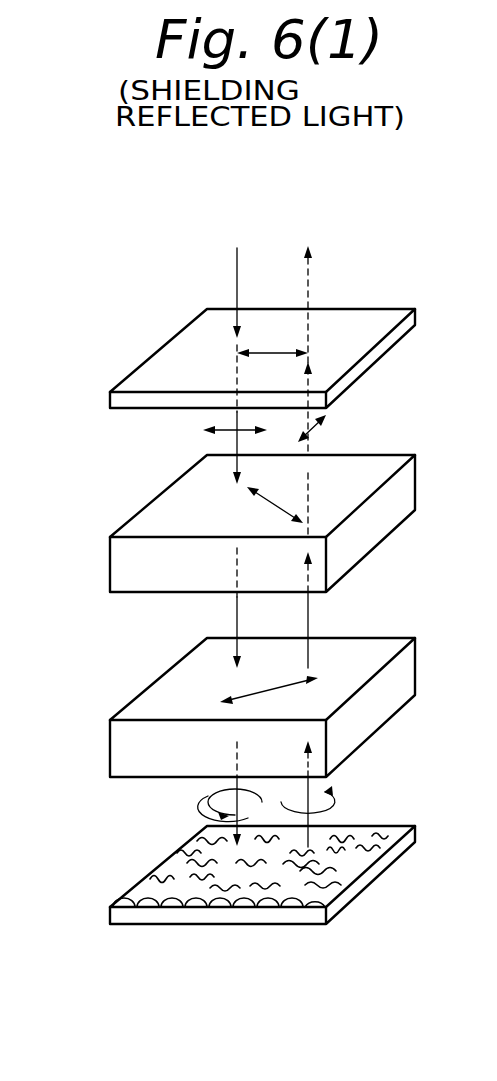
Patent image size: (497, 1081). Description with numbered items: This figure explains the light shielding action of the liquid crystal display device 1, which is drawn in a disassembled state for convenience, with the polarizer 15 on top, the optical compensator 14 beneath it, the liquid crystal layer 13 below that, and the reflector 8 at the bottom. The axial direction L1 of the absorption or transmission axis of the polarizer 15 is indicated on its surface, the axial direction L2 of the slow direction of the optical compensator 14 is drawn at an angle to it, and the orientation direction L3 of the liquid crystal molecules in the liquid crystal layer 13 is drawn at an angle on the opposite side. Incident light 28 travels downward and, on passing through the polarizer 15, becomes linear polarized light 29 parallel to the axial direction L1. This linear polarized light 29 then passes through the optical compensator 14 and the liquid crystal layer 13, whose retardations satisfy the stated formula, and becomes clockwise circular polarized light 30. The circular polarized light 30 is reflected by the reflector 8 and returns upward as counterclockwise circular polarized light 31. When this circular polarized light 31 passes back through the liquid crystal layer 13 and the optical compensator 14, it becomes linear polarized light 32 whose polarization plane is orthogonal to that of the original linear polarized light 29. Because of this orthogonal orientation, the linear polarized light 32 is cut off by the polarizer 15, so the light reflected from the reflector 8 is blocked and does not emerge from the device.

The liquid crystal display device 1 is at (87, 236).
The reflector 8 is at (372, 872).
The liquid crystal layer 13 is at (372, 712).
The optical compensator 14 is at (382, 520).
The polarizer 15 is at (382, 350).
The incident light 28 is at (236, 262).
The linear polarized light 29 is at (236, 438).
The clockwise circular polarized light 30 is at (205, 832).
The counterclockwise circular polarized light 31 is at (310, 757).
The linear polarized light 32 is at (321, 427).
The axial direction L1 is at (272, 352).
The axial direction of slow direction L2 is at (280, 508).
The orientation direction L3 is at (273, 689).